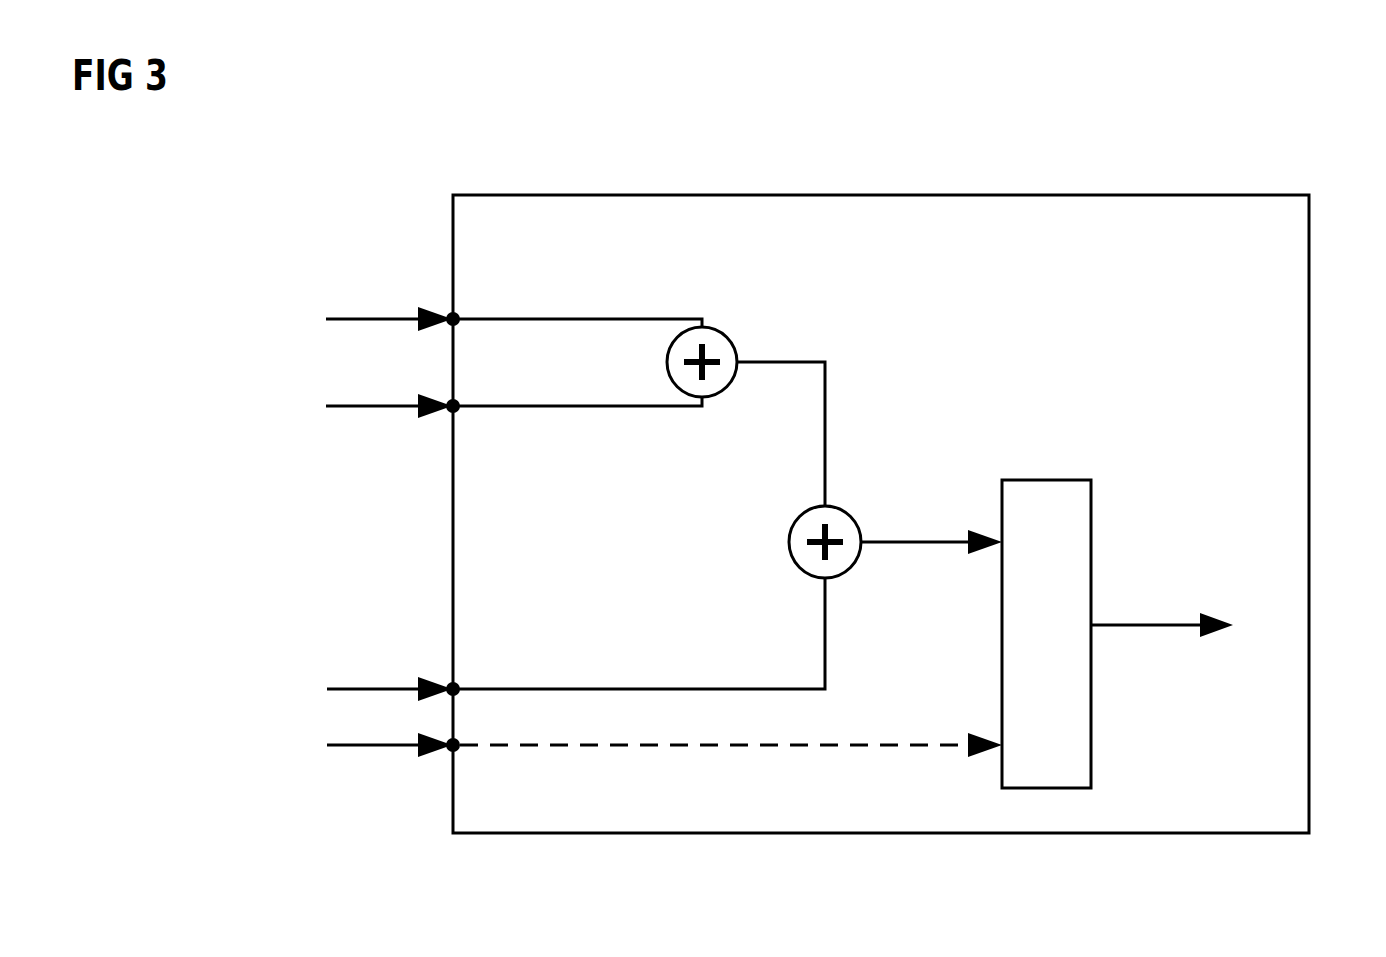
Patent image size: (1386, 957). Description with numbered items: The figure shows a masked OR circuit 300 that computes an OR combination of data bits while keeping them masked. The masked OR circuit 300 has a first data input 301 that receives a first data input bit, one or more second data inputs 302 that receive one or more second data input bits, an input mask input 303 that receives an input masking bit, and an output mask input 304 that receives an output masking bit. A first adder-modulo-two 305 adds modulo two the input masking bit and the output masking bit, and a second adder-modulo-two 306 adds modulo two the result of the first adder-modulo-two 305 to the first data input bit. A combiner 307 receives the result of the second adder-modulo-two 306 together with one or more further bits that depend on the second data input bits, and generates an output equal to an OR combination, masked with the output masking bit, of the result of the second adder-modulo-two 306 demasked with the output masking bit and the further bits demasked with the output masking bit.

The masked OR circuit 300 is at (1293, 195).
The first data input 301 is at (453, 682).
The second data inputs 302 is at (453, 752).
The input mask input 303 is at (453, 399).
The output mask input 304 is at (453, 312).
The first adder-modulo-2 305 is at (728, 337).
The second adder-modulo-2 306 is at (849, 508).
The combiner 307 is at (1078, 480).